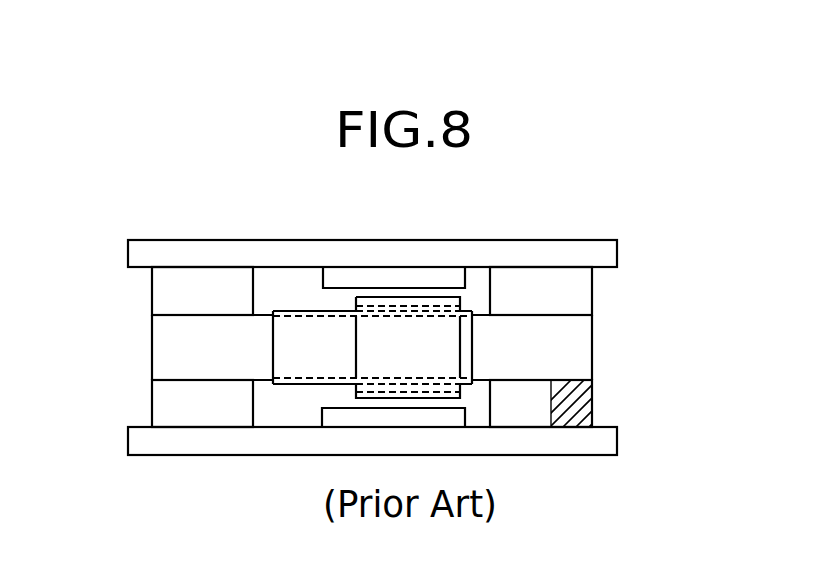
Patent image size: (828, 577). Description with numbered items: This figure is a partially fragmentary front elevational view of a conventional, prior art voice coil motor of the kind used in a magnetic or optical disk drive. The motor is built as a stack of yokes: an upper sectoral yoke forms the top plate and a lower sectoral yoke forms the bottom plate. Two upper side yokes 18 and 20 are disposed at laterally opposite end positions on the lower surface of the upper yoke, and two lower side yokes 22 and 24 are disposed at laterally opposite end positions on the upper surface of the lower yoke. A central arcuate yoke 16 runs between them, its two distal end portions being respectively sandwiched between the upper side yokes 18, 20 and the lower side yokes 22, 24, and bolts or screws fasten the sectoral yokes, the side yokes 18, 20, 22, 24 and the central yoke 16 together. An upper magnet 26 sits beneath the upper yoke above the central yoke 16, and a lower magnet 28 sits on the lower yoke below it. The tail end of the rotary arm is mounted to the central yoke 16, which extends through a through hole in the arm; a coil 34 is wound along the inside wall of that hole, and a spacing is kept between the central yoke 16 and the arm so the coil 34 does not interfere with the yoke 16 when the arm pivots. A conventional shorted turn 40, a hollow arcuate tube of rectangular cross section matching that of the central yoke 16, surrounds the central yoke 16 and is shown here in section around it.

The central arcuate yoke 16 is at (592, 352).
The upper side yoke 18 is at (593, 288).
The upper side yoke 20 is at (160, 293).
The lower side yoke 22 is at (592, 405).
The lower side yoke 24 is at (160, 411).
The upper magnet 26 is at (372, 280).
The lower magnet 28 is at (340, 420).
The coil 34 is at (460, 400).
The shorted turn 40 is at (283, 385).